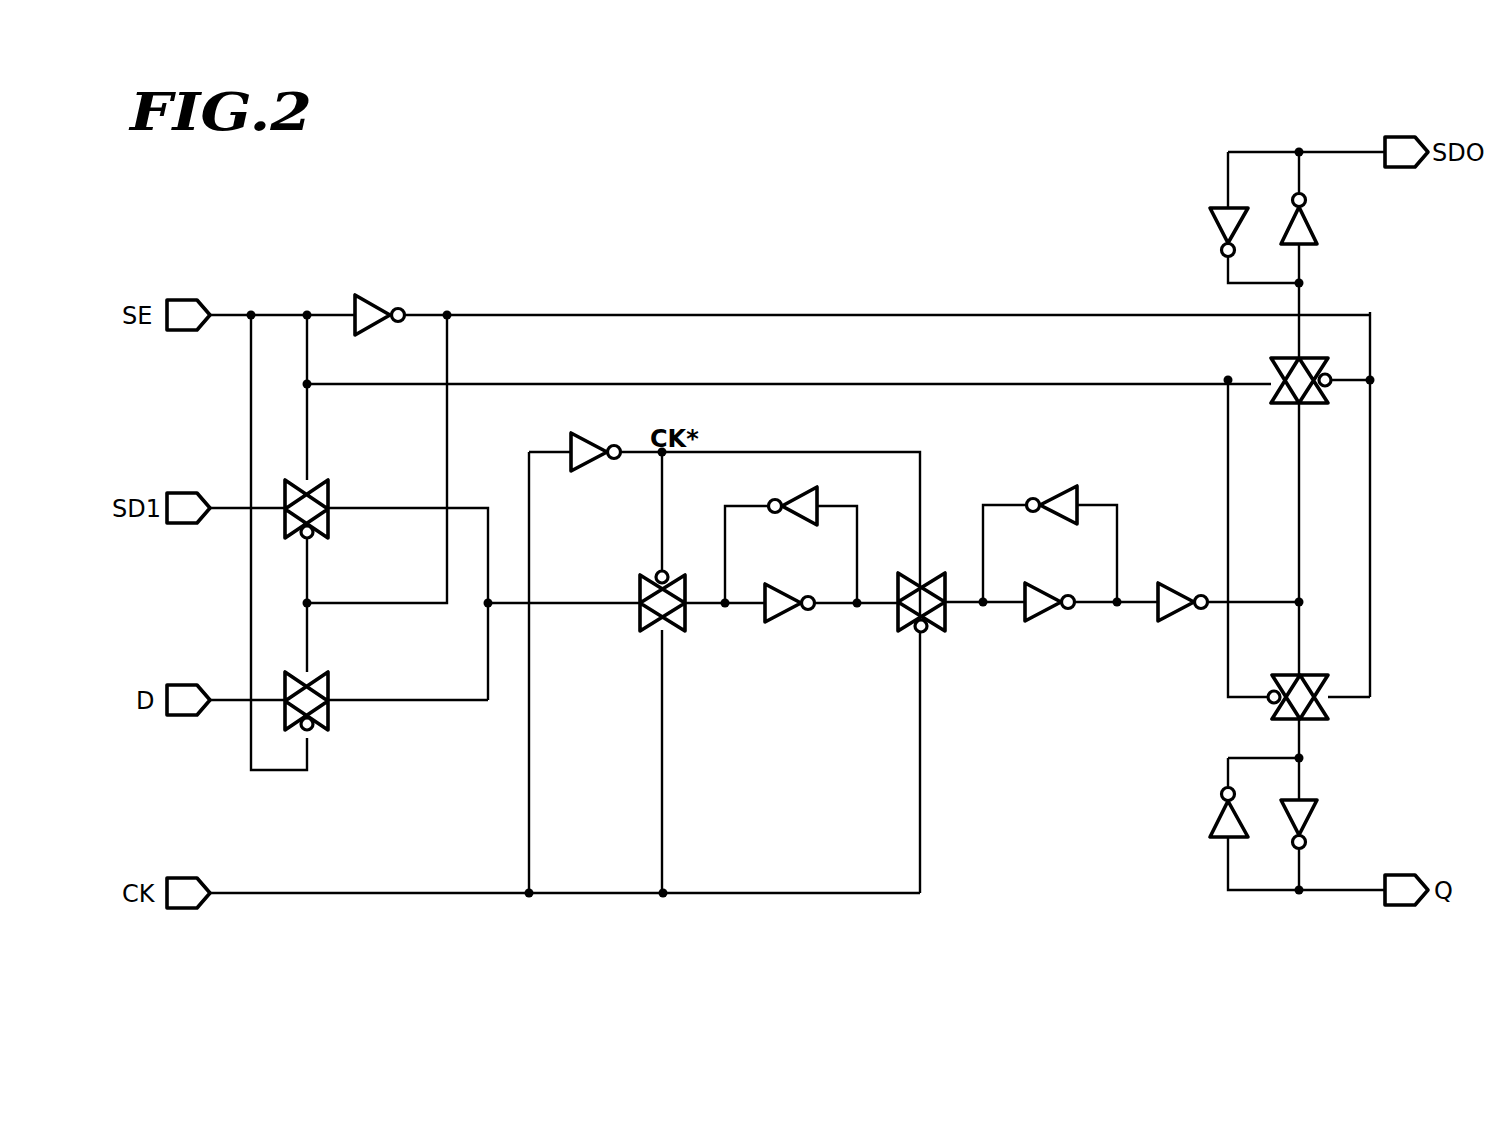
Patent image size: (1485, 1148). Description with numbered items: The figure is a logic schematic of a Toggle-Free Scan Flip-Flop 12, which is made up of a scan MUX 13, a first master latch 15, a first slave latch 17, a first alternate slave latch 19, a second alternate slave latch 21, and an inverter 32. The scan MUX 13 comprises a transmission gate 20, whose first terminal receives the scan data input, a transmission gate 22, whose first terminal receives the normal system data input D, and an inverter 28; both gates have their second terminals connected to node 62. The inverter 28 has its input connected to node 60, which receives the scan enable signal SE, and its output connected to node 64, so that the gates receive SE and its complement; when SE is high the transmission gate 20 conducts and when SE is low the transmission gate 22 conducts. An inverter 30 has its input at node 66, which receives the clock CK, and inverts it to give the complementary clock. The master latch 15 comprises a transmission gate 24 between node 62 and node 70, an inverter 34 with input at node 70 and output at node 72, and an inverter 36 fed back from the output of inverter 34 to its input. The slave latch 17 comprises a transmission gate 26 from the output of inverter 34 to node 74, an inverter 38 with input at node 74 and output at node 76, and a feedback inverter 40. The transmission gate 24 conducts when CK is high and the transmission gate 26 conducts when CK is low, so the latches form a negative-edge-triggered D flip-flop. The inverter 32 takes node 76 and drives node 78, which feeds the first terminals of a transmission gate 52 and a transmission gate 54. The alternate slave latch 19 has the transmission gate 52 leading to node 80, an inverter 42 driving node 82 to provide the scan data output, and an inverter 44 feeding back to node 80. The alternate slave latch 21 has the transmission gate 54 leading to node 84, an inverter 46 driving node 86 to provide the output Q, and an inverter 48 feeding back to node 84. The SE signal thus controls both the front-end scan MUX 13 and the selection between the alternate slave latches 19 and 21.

The Toggle-Free Scan Flip-Flop 12 is at (430, 158).
The scan MUX 13 is at (110, 690).
The first master latch 15 is at (626, 918).
The first slave latch 17 is at (1066, 685).
The first alternate slave latch 19 is at (1145, 202).
The second alternate slave latch 21 is at (1140, 823).
The transmission gate 20 is at (330, 520).
The transmission gate 22 is at (330, 712).
The transmission gate 24 is at (639, 615).
The transmission gate 26 is at (942, 587).
The inverter 28 is at (368, 298).
The inverter 30 is at (588, 437).
The inverter 32 is at (1186, 562).
The inverter 34 is at (786, 619).
The inverter 36 is at (790, 521).
The inverter 38 is at (1040, 620).
The inverter 40 is at (1052, 520).
The inverter 42 is at (1318, 229).
The inverter 44 is at (1212, 224).
The inverter 46 is at (1319, 818).
The inverter 48 is at (1212, 815).
The transmission gate 52 is at (1310, 404).
The transmission gate 54 is at (1310, 672).
The node 60 is at (251, 312).
The node 62 is at (486, 604).
The node 64 is at (447, 312).
The node 66 is at (530, 896).
The node 70 is at (725, 608).
The node 72 is at (857, 608).
The node 74 is at (983, 607).
The node 76 is at (1117, 607).
The node 78 is at (1297, 600).
The node 80 is at (1302, 284).
The node 82 is at (1299, 150).
The node 84 is at (1302, 759).
The node 86 is at (1299, 893).